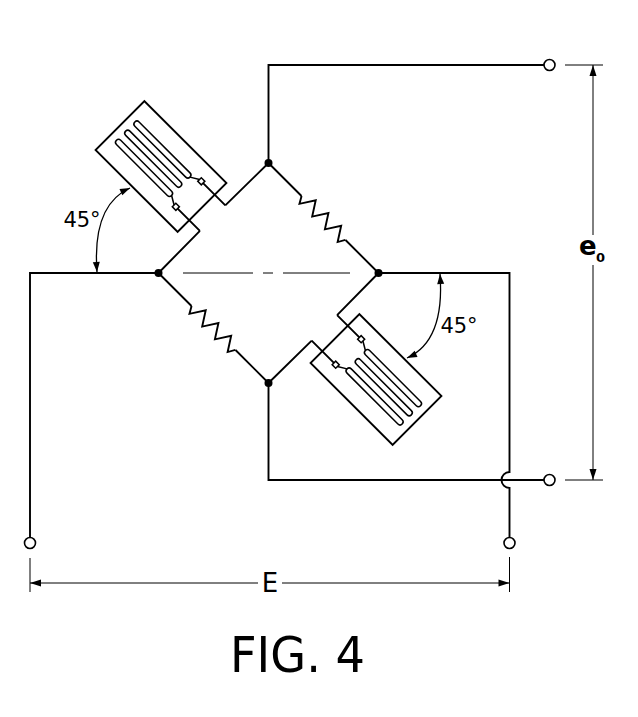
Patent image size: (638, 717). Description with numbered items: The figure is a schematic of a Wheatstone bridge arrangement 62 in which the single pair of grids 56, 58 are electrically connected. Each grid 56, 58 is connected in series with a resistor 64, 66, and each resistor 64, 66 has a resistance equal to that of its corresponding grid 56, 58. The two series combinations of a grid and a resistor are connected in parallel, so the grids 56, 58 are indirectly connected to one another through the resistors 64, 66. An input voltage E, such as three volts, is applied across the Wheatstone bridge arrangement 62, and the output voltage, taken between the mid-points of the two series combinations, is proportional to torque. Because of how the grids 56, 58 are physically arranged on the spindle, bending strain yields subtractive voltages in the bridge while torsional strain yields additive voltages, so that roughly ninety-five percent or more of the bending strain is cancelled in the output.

The Wheatstone bridge arrangement 62 is at (226, 67).
The grid 58 is at (103, 141).
The grid 56 is at (352, 405).
The resistor 64 is at (341, 226).
The resistor 66 is at (211, 334).